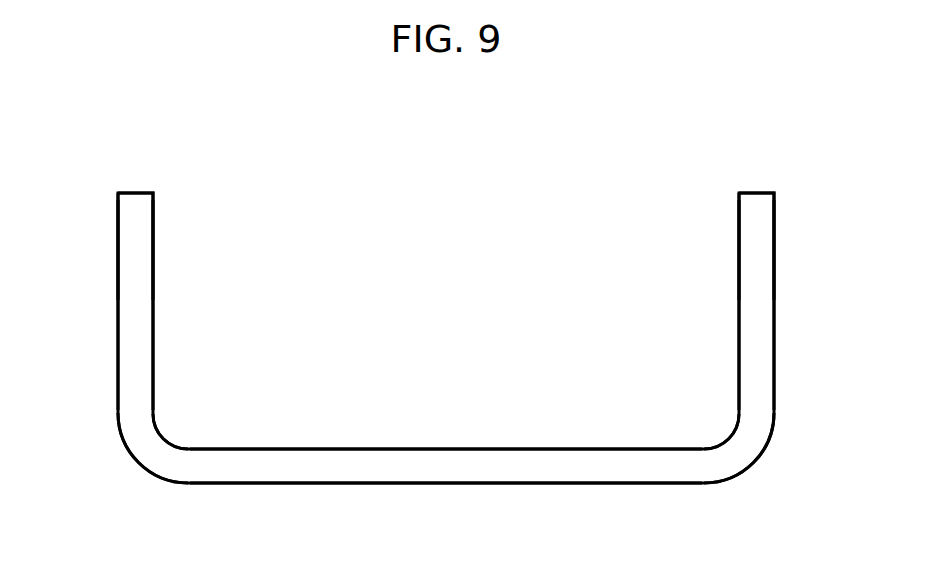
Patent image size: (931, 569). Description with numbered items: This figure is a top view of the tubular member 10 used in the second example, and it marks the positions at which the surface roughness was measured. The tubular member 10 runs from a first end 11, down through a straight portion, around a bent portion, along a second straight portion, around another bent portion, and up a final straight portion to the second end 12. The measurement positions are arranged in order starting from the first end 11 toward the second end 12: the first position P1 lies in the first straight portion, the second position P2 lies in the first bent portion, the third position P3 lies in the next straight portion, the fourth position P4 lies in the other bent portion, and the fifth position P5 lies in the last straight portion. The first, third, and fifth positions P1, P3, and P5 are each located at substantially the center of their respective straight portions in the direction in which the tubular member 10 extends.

The tubular member 10 is at (768, 328).
The first end 11 is at (128, 169).
The second end 12 is at (762, 173).
The first position P1 is at (168, 280).
The second position P2 is at (134, 476).
The third position P3 is at (445, 444).
The fourth position P4 is at (750, 484).
The fifth position P5 is at (730, 274).